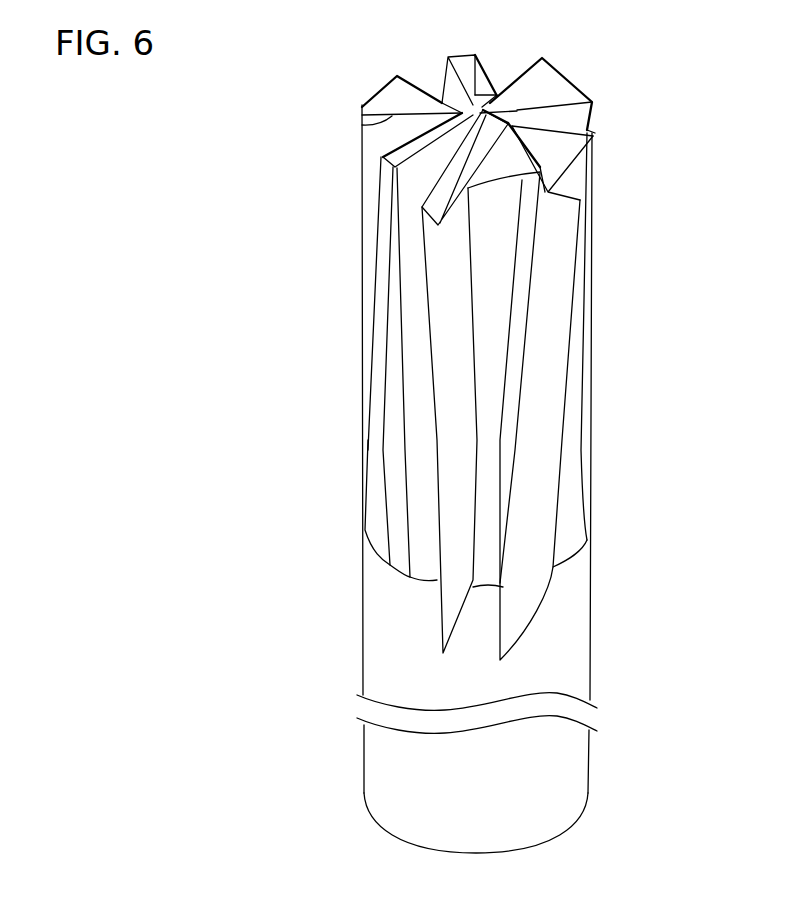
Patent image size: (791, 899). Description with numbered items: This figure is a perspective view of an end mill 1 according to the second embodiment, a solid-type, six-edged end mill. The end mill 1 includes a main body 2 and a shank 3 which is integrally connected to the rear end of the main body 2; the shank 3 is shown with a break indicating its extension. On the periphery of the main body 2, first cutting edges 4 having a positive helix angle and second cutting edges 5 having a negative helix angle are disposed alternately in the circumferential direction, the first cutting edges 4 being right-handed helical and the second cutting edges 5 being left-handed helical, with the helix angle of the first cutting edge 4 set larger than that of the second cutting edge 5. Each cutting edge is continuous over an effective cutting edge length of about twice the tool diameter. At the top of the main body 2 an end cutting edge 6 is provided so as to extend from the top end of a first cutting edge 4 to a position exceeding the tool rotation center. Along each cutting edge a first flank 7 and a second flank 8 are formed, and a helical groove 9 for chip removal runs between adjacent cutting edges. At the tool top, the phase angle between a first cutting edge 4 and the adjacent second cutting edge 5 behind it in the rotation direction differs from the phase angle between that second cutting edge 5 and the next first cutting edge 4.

The end mill 1 is at (594, 620).
The main body 2 is at (573, 514).
The shank 3 is at (563, 758).
The first cutting edge 4 is at (540, 60).
The second cutting edge 5 is at (445, 68).
The end cutting edge 6 is at (518, 73).
The first flank 7 is at (407, 352).
The second flank 8 is at (408, 427).
The helical groove 9 is at (410, 227).